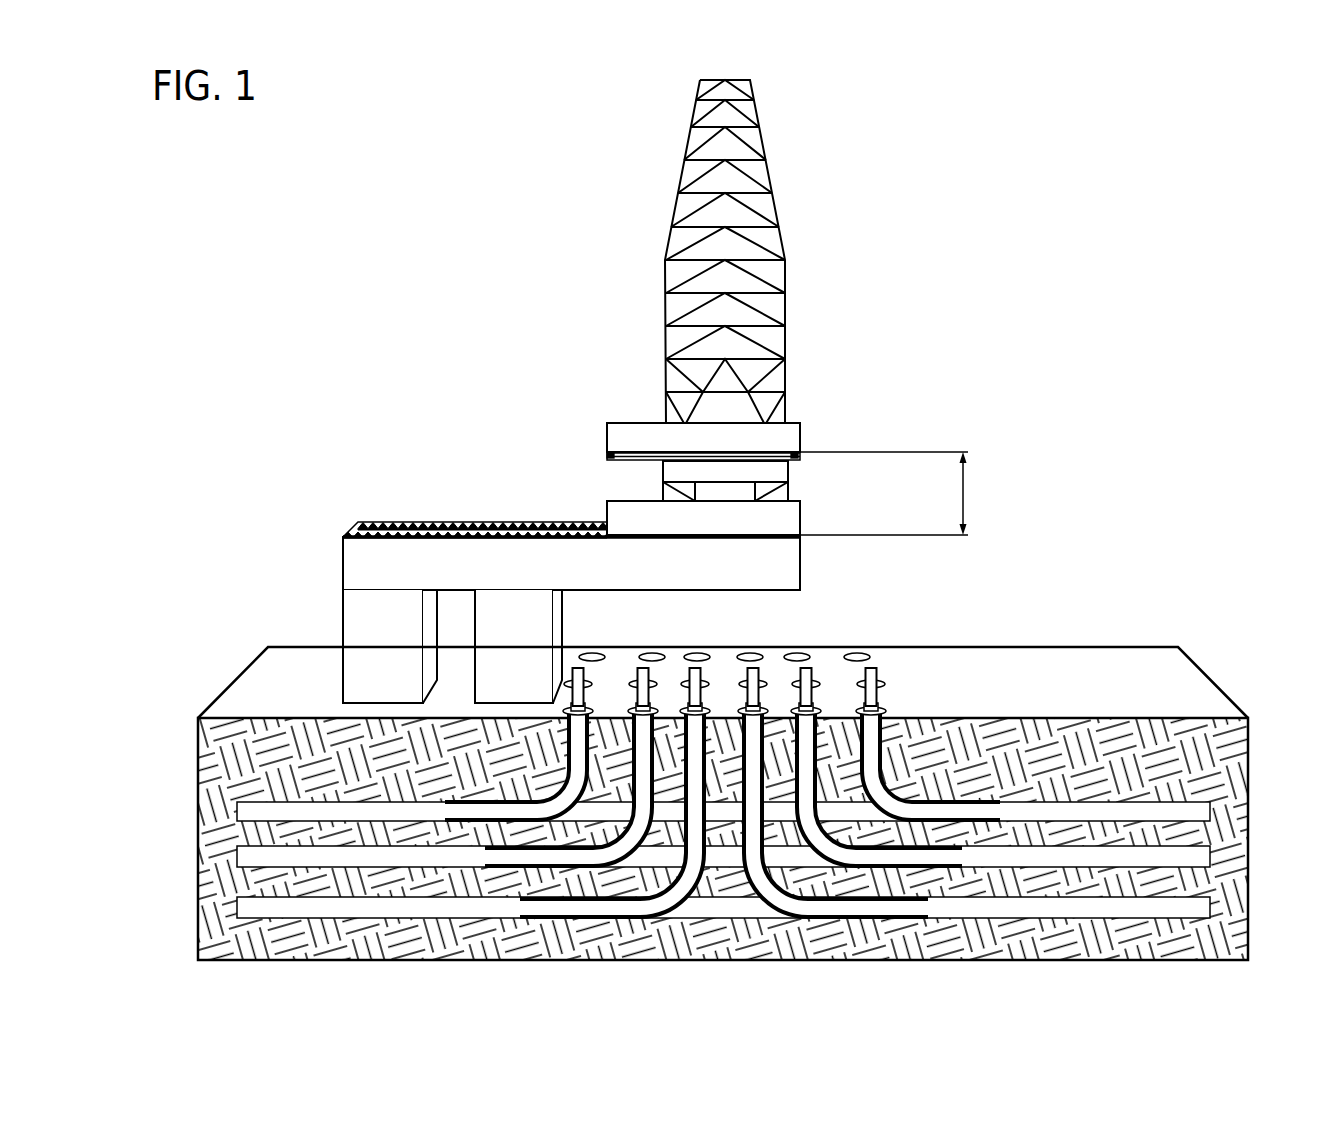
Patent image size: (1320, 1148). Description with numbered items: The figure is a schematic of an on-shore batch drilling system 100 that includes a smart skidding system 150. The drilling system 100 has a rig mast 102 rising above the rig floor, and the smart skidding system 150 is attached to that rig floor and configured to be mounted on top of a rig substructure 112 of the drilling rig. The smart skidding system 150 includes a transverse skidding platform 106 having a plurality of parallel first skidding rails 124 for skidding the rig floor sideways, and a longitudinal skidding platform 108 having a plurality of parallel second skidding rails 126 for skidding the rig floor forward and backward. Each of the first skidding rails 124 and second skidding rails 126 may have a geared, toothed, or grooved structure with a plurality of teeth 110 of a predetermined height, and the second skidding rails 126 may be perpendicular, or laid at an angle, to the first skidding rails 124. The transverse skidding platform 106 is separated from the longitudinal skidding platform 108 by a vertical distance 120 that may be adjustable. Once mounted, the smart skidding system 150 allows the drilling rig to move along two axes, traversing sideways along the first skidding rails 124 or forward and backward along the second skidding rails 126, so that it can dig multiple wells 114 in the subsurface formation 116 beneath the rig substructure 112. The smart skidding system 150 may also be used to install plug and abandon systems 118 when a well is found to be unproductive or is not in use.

The on-shore batch drilling system 100 is at (648, 77).
The rig mast 102 is at (766, 145).
The transverse skidding platform 106 is at (805, 452).
The longitudinal skidding platform 108 is at (805, 535).
The teeth 110 is at (397, 522).
The rig substructure 112 is at (343, 563).
The wells 114 is at (798, 654).
The subsurface formation 116 is at (266, 688).
The plug and abandon systems 118 is at (878, 670).
The vertical distance 120 is at (966, 494).
The first skidding rails 124 is at (606, 456).
The second skidding rails 126 is at (512, 535).
The smart skidding system 150 is at (1071, 412).